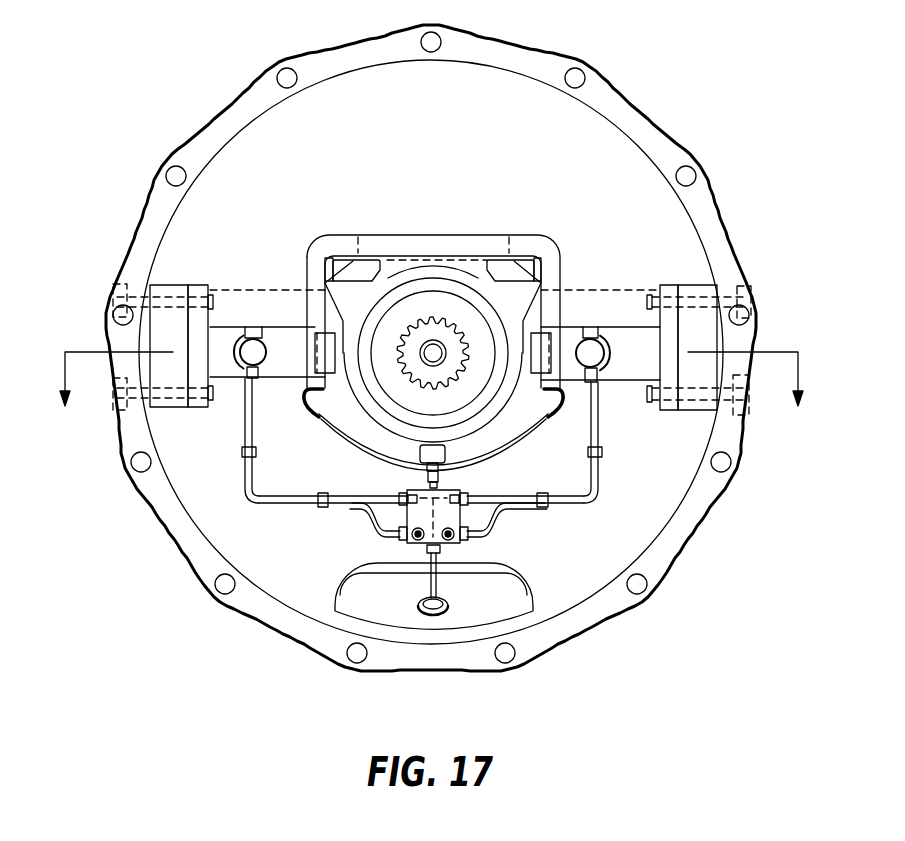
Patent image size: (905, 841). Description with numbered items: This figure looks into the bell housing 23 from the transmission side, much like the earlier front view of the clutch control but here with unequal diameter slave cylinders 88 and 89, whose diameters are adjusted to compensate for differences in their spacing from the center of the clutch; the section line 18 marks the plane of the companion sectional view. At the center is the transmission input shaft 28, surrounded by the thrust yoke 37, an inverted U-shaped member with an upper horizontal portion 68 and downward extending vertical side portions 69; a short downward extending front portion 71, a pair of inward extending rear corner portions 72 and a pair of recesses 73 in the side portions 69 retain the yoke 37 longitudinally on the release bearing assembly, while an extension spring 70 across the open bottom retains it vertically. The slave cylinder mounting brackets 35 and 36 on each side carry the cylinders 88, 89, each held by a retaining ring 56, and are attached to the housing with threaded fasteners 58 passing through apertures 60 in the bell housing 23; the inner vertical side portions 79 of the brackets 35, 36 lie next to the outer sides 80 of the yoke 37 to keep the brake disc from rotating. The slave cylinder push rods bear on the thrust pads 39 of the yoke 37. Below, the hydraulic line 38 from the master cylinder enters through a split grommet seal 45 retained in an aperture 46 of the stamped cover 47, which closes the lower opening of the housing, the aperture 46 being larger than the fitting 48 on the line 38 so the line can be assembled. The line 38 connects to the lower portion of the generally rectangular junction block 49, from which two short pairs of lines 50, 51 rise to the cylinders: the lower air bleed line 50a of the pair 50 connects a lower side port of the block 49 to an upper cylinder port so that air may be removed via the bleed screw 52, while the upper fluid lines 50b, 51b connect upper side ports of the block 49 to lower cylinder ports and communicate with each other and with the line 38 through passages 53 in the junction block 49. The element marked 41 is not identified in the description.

The section line 18- 18 is at (430, 362).
The bell housing 23 is at (431, 348).
The transmission input shaft 28 is at (450, 408).
The slave cylinder mounting bracket 35 is at (732, 318).
The slave cylinder mounting bracket 36 is at (137, 311).
The thrust yoke 37 is at (433, 292).
The hydraulic line 38 is at (546, 626).
The thrust pads 39 is at (339, 606).
The fitting 41 is at (356, 650).
The split grommet seal 45 is at (488, 678).
The aperture 46 is at (441, 662).
The stamped cover 47 is at (407, 596).
The fitting 48 is at (401, 639).
The junction block 49 is at (378, 524).
The pair of lines 50 is at (312, 530).
The air bleed line 50a is at (232, 451).
The fluid line 50b is at (333, 478).
The pair of lines 51 is at (550, 526).
The fluid line 51b is at (525, 478).
The bleed screw 52 is at (459, 626).
The passages 53 is at (479, 527).
The retaining ring 56 is at (428, 274).
The threaded fasteners 58 is at (125, 411).
The apertures 60 is at (106, 384).
The upper horizontal portion 68 is at (433, 307).
The vertical side portions 69 is at (274, 283).
The extension spring 70 is at (617, 442).
The front portion 71 is at (433, 308).
The rear corner portions 72 is at (340, 261).
The recesses 73 is at (422, 300).
The inner vertical side portions 79 is at (562, 238).
The outer sides 80 is at (481, 252).
The slave cylinder 88 is at (679, 456).
The slave cylinder 89 is at (183, 458).